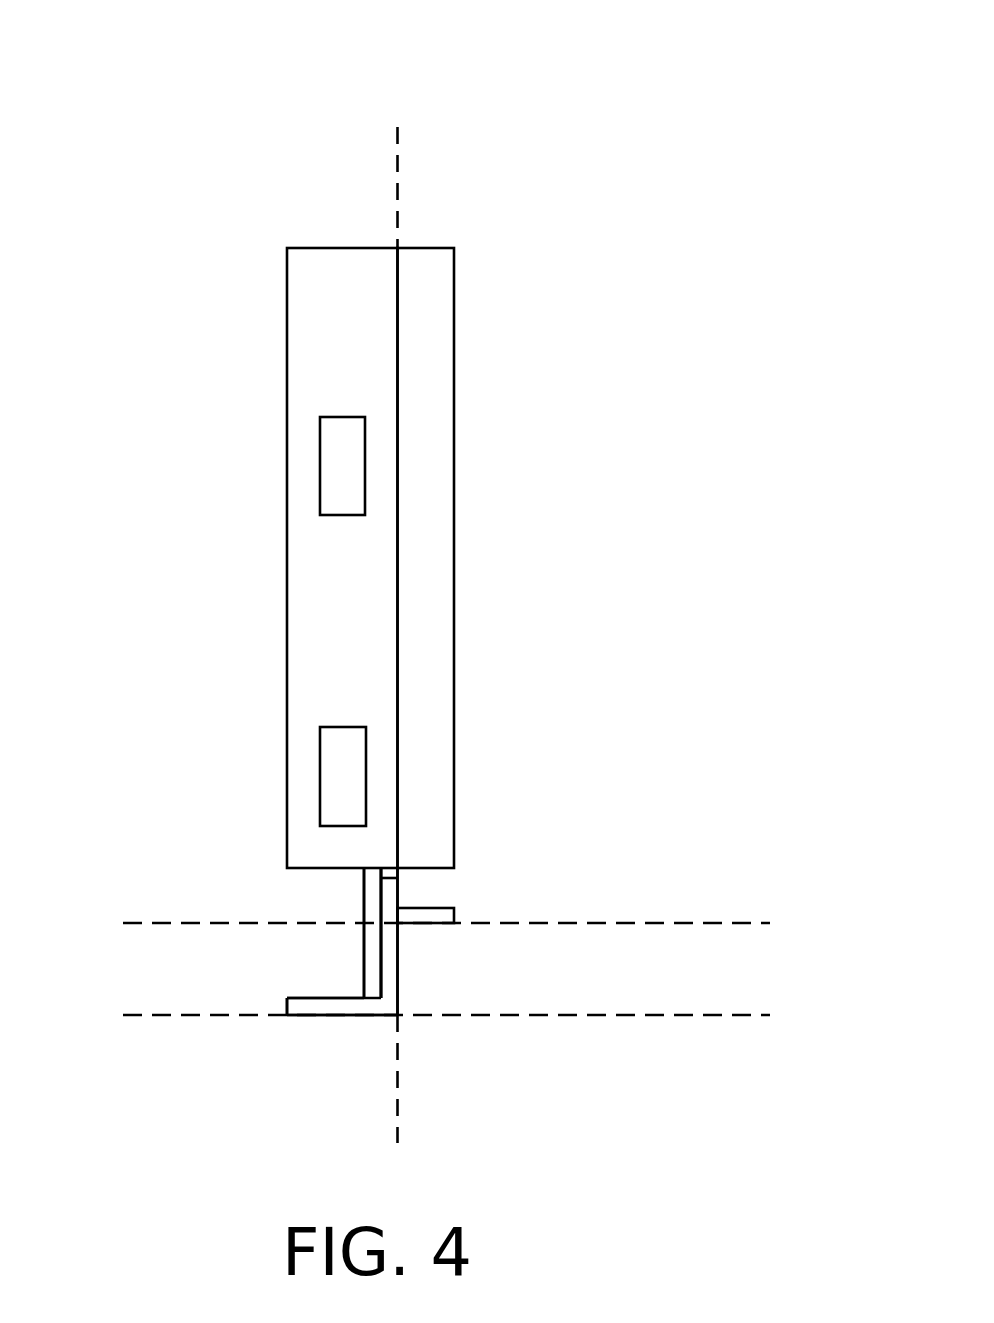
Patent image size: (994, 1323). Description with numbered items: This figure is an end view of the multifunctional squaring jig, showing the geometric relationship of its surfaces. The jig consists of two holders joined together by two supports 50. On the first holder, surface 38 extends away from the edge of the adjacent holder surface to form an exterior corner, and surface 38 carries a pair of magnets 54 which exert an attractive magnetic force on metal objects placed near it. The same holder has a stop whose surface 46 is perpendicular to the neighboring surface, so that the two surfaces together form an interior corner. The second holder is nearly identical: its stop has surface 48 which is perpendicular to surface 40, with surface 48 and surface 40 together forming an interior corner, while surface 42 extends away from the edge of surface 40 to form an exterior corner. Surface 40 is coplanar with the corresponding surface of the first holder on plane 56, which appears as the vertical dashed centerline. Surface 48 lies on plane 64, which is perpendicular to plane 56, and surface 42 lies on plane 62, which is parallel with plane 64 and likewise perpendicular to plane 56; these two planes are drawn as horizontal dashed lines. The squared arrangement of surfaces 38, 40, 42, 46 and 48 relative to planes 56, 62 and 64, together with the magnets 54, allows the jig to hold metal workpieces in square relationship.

The surface 38 is at (321, 352).
The surface 40 is at (398, 975).
The surface 42 is at (345, 1018).
The surface 46 is at (430, 382).
The surface 48 is at (431, 927).
The supports 50 is at (364, 978).
The magnets 54 is at (319, 745).
The plane 56 is at (398, 152).
The plane 62 is at (742, 1017).
The plane 64 is at (628, 925).